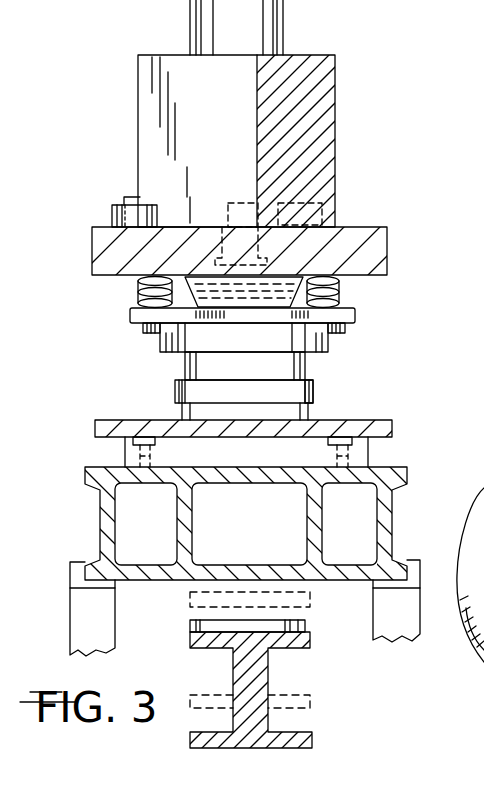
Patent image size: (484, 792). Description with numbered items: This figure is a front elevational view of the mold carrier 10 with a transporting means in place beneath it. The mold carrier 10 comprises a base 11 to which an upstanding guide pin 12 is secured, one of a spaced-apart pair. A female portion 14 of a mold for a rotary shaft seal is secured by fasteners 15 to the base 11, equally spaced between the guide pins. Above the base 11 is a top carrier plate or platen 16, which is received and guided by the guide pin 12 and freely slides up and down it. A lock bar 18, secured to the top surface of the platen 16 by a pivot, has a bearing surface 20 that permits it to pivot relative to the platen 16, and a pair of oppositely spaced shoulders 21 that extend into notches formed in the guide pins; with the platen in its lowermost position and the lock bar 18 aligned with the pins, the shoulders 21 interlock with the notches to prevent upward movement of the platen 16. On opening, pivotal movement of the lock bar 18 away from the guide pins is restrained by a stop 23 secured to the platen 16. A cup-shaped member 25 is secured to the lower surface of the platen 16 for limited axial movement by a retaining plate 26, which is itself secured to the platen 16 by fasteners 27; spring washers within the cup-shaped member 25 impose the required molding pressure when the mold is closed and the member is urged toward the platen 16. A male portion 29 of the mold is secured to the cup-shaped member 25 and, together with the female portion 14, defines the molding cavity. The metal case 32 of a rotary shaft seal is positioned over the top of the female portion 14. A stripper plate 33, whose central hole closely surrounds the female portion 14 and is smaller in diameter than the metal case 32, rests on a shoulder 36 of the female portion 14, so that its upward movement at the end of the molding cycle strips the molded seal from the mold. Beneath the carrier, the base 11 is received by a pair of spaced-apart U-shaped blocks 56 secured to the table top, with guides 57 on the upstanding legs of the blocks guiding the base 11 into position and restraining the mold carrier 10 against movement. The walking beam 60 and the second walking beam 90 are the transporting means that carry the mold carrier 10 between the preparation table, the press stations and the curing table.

The mold carrier 10 is at (86, 376).
The base 11 is at (407, 467).
The guide pin 12 is at (190, 22).
The female portion of the mold 14 is at (178, 407).
The fasteners 15 is at (122, 452).
The top carrier plate or platen 16 is at (92, 256).
The lock bar 18 is at (150, 108).
The bearing surface 20 is at (228, 203).
The shoulders 21 is at (128, 196).
The stop 23 is at (112, 215).
The cup-shaped member 25 is at (330, 342).
The retaining plate 26 is at (130, 316).
The fasteners 27 is at (143, 328).
The male portion of the mold 29 is at (188, 360).
The metal case 32 is at (312, 388).
The stripper plate 33 is at (392, 428).
The shoulder 36 is at (345, 436).
The U-shaped blocks 56 is at (70, 637).
The guides 57 is at (70, 564).
The walking beam 60 is at (244, 684).
The second walking beam 90 is at (300, 668).